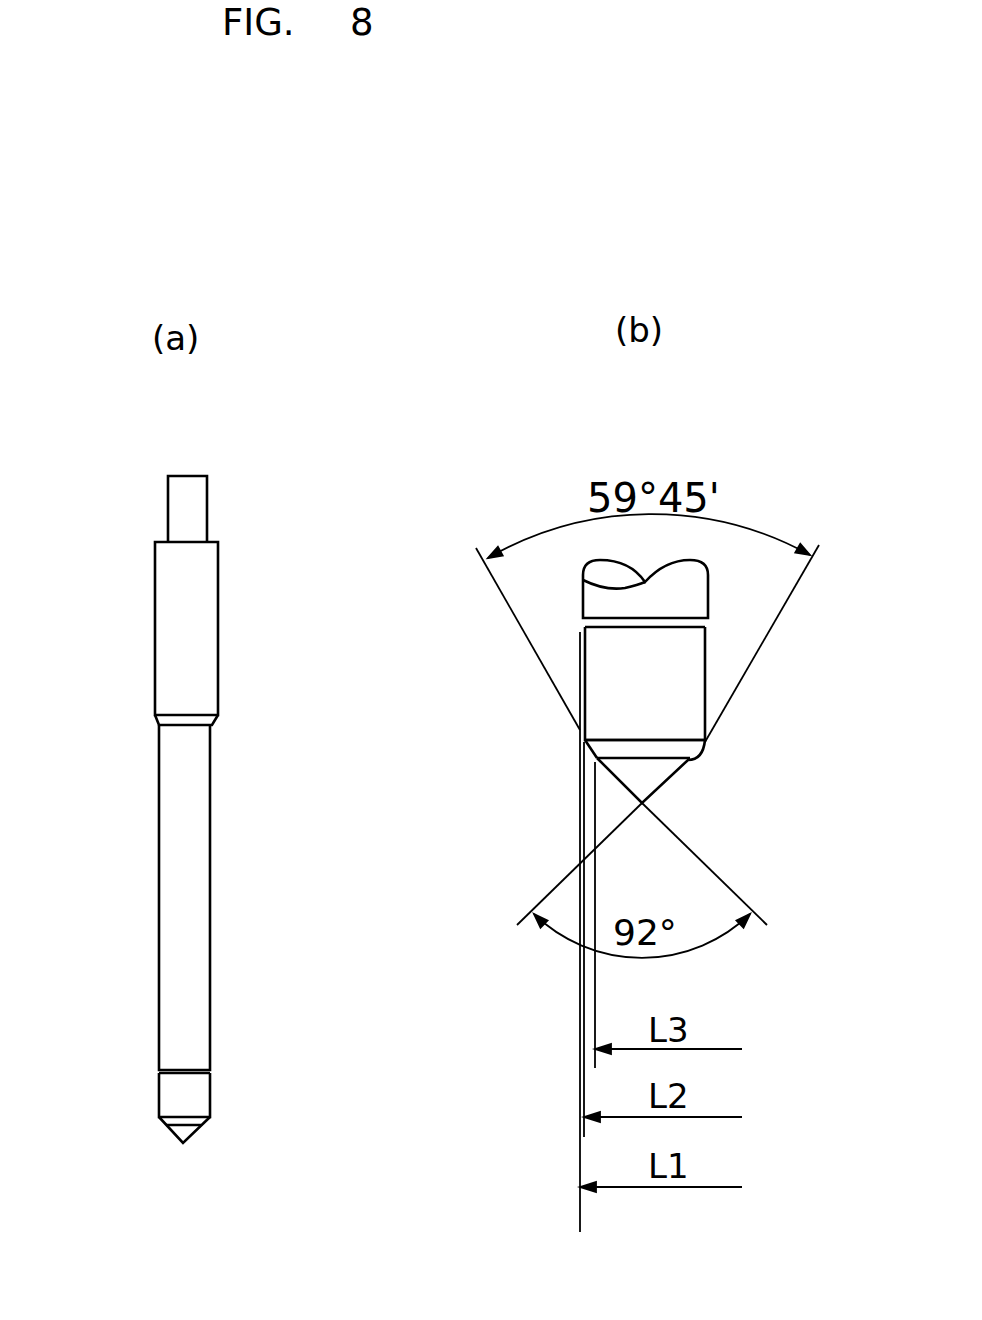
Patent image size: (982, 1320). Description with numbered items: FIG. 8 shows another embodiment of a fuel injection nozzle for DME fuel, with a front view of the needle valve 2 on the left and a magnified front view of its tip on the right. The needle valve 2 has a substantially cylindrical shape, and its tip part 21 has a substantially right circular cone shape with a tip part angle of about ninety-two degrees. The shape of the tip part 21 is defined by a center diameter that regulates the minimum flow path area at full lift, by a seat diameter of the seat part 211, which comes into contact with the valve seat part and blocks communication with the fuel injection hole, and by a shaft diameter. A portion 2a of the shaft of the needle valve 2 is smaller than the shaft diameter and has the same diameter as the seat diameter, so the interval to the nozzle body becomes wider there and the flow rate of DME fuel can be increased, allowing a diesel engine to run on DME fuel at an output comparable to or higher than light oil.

The needle valve 2 is at (155, 653).
The shaft portion of the needle valve 2a is at (705, 672).
The tip part 21 is at (195, 1130).
The seat part 211 is at (647, 740).